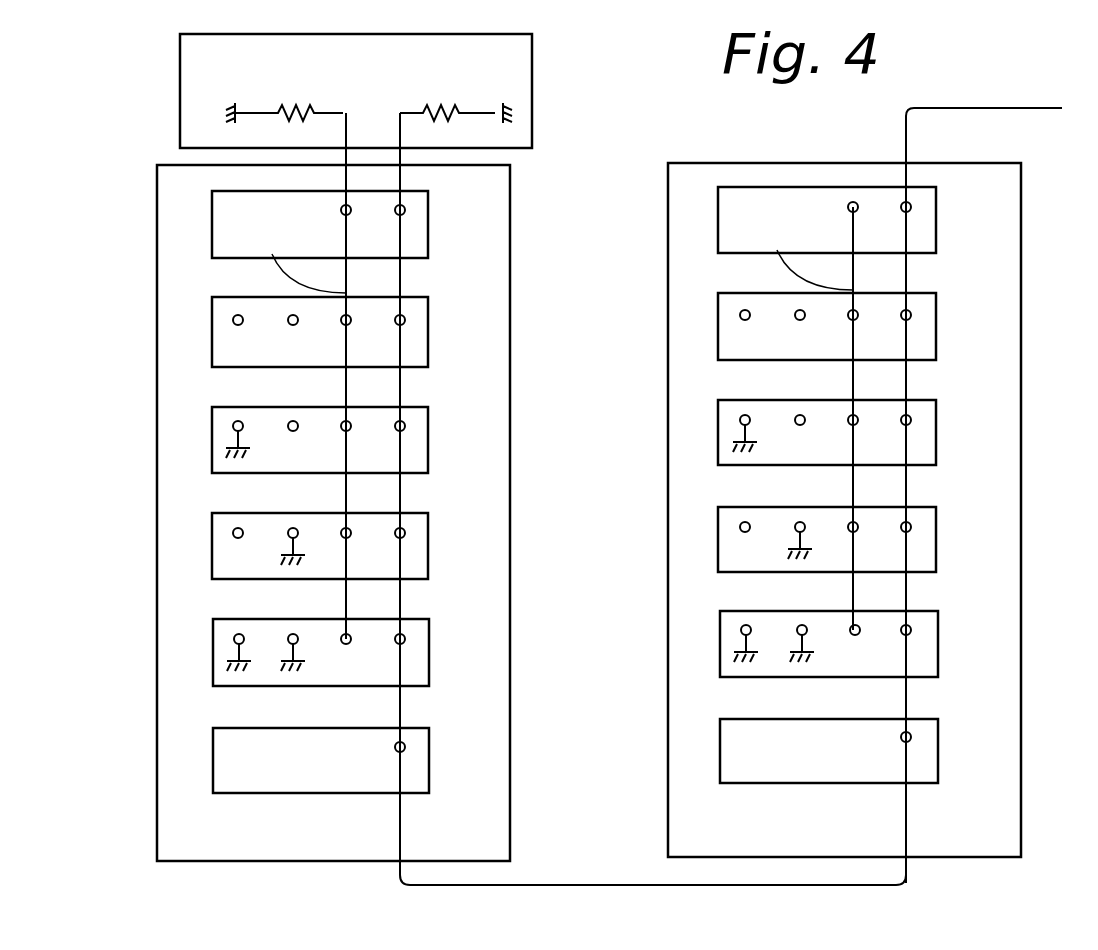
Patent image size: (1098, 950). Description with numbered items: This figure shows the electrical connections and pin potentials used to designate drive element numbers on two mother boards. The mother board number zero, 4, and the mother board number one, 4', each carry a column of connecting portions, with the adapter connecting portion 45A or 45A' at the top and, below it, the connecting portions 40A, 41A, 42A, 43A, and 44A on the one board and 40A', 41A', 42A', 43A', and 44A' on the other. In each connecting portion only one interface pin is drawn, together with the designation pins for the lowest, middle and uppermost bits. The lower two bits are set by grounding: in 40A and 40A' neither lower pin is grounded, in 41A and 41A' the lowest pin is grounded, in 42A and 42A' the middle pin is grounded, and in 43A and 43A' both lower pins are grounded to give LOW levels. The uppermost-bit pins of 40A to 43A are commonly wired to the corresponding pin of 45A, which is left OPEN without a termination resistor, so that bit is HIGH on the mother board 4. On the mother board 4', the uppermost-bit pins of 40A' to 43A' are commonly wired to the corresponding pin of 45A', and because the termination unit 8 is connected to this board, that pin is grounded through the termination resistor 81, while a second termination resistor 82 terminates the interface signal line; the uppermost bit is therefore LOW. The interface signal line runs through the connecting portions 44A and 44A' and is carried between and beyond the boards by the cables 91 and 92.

The termination unit 8 is at (371, 91).
The termination resistor 81 is at (296, 115).
The termination resistor 82 is at (442, 115).
The mother board No. 1 4' is at (357, 494).
The connecting portion for the adapter 45A' is at (356, 242).
The connecting portion 40A' is at (353, 332).
The connecting portion 41A' is at (353, 440).
The connecting portion 42A' is at (353, 546).
The connecting portion 43A' is at (355, 652).
The connecting portion 44A' is at (355, 760).
The mother board No. 0 4 is at (861, 499).
The connecting portion for the adapter 45A is at (859, 238).
The connecting portion 40A is at (859, 326).
The connecting portion 41A is at (859, 432).
The connecting portion 42A is at (859, 539).
The connecting portion 43A is at (861, 644).
The connecting portion 44A is at (861, 751).
The cable 91 is at (598, 884).
The cable 92 is at (1047, 108).